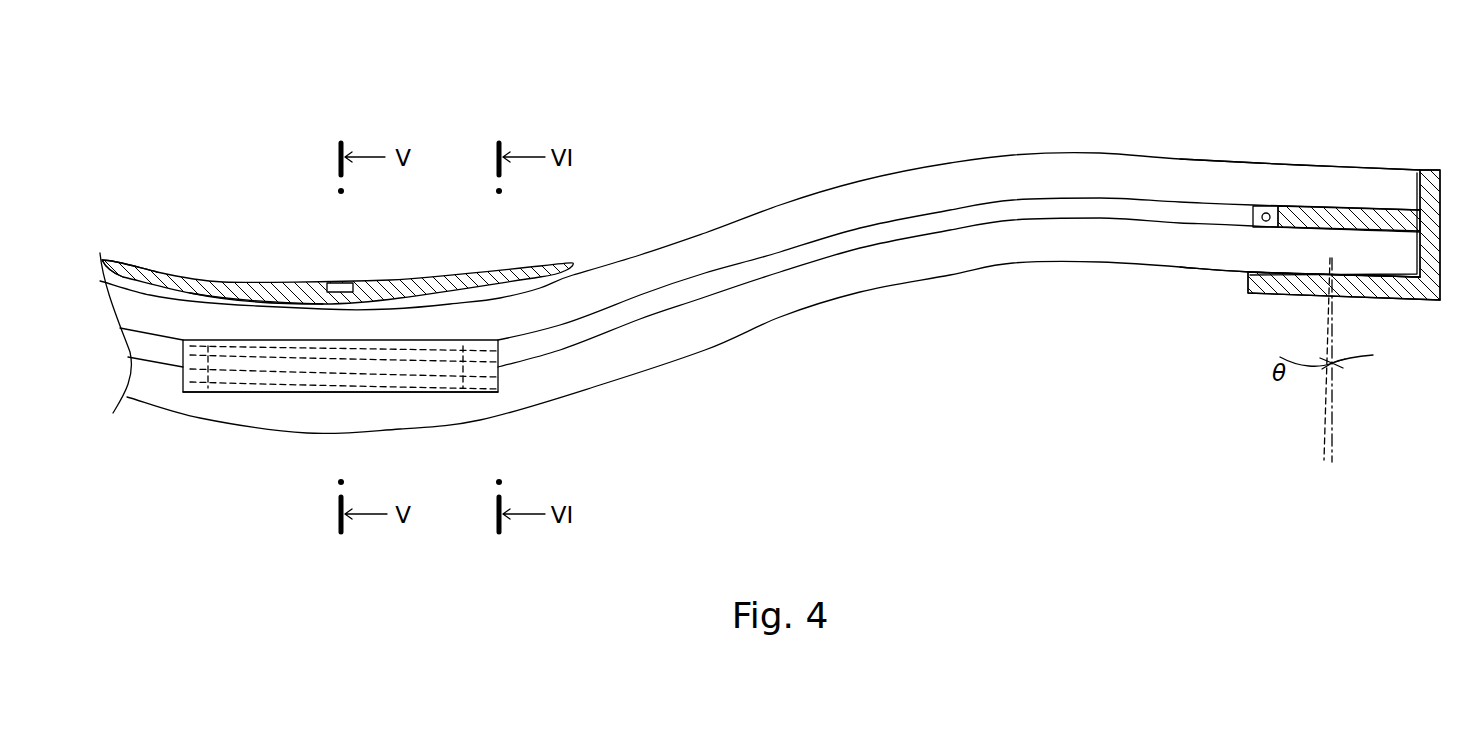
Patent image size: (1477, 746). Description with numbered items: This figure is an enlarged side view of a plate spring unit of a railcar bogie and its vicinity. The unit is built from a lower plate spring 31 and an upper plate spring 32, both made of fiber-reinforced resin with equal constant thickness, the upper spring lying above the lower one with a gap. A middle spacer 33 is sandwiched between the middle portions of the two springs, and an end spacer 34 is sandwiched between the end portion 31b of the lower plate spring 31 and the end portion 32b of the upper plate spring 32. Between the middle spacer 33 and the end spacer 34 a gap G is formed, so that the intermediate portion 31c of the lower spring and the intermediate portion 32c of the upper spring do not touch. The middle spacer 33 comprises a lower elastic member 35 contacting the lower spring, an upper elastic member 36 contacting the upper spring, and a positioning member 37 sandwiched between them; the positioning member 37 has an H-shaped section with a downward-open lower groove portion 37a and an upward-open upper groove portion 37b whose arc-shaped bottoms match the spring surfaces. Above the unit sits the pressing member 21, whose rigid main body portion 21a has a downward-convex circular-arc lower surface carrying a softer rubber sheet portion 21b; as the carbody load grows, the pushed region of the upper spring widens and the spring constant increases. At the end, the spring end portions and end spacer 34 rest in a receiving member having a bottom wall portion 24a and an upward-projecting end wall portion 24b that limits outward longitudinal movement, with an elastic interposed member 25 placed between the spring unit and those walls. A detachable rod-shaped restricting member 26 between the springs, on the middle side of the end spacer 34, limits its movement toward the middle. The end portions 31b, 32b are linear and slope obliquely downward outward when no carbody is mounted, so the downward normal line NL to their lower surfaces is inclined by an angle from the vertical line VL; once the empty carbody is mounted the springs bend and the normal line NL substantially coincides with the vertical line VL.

The pressing member 21 is at (423, 278).
The main body portion 21a is at (223, 278).
The sheet portion 21b is at (165, 267).
The bottom wall portion 24a is at (1387, 293).
The end wall portion 24b is at (1444, 240).
The interposed member 25 is at (1423, 167).
The restricting member 26 is at (1268, 212).
The lower plate spring 31 is at (711, 359).
The end portion of the lower plate spring 31b is at (1282, 262).
The intermediate portion of the lower plate spring 31c is at (872, 275).
The upper plate spring 32 is at (712, 223).
The end portion of the upper plate spring 32b is at (1308, 173).
The intermediate portion of the upper plate spring 32c is at (862, 188).
The middle spacer 33 is at (341, 404).
The end spacer 34 is at (1367, 210).
The lower elastic member 35 is at (250, 380).
The upper elastic member 36 is at (383, 345).
The positioning member 37 is at (452, 337).
The lower groove portion 37a is at (202, 365).
The upper groove portion 37b is at (290, 355).
The gap G is at (797, 257).
The normal line NL is at (1323, 418).
The vertical line VL is at (1333, 432).